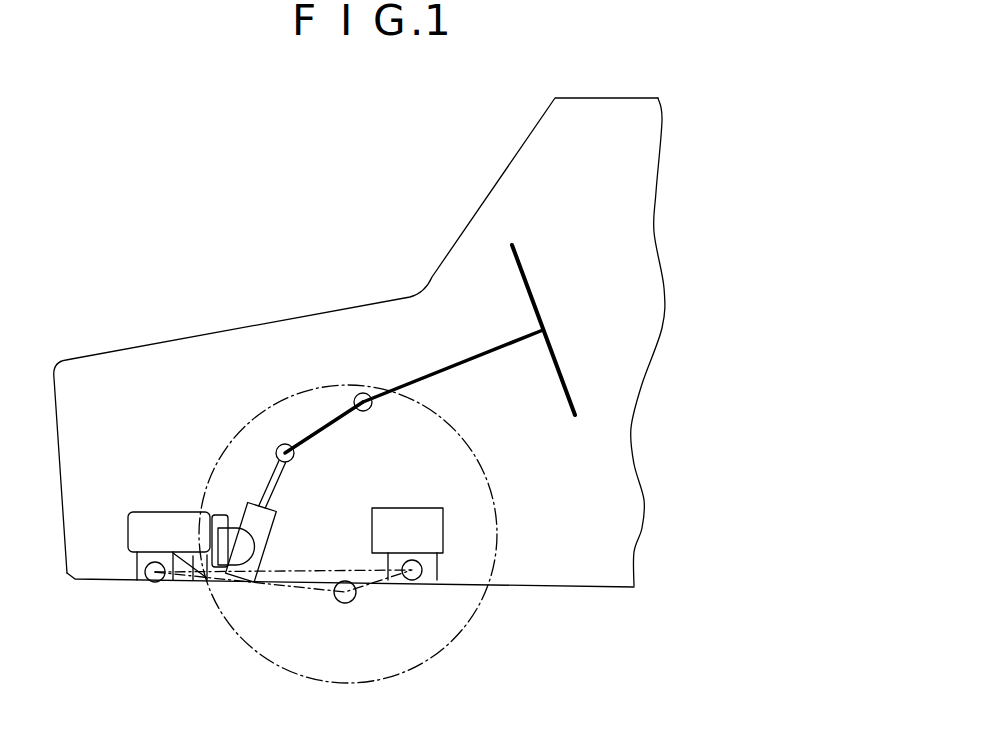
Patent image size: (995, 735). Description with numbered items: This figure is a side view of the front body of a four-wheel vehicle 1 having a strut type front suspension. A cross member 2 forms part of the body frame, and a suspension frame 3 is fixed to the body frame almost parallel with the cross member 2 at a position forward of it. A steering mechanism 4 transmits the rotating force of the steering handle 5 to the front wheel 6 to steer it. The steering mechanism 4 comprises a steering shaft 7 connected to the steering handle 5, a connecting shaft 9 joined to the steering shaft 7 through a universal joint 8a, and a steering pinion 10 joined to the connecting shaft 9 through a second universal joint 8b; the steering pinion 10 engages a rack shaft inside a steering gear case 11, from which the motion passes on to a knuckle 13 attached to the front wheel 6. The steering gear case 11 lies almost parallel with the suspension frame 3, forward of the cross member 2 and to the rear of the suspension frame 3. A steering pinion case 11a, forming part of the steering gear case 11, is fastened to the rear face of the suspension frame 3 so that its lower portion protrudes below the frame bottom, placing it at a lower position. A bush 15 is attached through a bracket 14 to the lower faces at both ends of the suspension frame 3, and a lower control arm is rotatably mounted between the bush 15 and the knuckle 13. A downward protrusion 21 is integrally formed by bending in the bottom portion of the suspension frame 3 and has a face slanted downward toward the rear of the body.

The four-wheel vehicle 1 is at (395, 228).
The cross member 2 is at (408, 512).
The suspension frame 3 is at (163, 520).
The steering mechanism 4 is at (397, 353).
The steering handle 5 is at (530, 291).
The front wheel 6 is at (470, 620).
The steering shaft 7 is at (457, 365).
The universal joint 8a is at (364, 393).
The universal joint 8b is at (278, 446).
The connecting shaft 9 is at (336, 423).
The steering pinion 10 is at (272, 490).
The steering gear case 11 is at (238, 505).
The steering pinion case 11a is at (265, 528).
The knuckle 13 is at (347, 604).
The bracket 14 is at (138, 562).
The bush 15 is at (153, 583).
The downward protrusion 21 is at (193, 580).